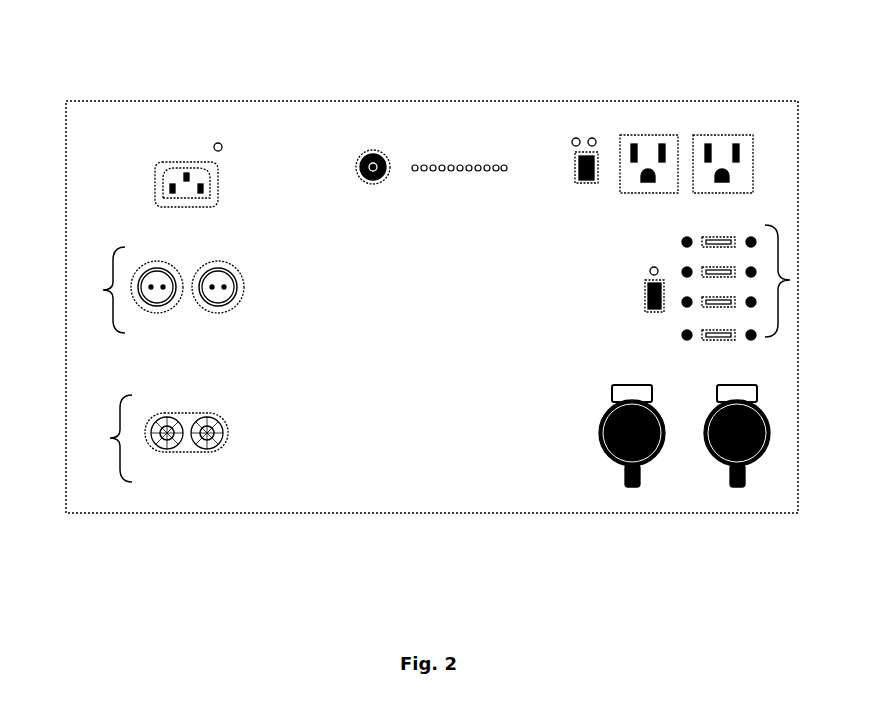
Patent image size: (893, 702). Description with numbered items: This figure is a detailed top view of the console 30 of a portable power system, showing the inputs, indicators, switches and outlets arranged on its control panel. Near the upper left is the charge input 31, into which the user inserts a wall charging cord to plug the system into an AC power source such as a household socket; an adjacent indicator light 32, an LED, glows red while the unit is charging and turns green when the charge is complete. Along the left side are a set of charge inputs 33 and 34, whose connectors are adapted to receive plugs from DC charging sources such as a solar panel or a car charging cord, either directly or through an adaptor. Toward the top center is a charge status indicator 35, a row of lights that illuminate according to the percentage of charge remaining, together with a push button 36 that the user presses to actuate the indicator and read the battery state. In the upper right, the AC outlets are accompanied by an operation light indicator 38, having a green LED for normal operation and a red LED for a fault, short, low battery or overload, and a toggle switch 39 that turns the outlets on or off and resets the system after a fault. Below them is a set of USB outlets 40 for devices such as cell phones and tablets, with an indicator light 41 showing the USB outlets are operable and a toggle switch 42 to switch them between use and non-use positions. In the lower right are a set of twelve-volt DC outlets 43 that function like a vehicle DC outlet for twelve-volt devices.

The console 30 is at (332, 80).
The charge input 31 is at (158, 165).
The indicator light 32 is at (217, 142).
The charge input 33 is at (106, 291).
The charge input 34 is at (112, 439).
The charge status indicator 35 is at (447, 166).
The push button 36 is at (380, 154).
The operation light indicator 38 is at (577, 138).
The toggle switch 39 is at (594, 158).
The USB outlets 40 is at (780, 282).
The indicator light 41 is at (652, 275).
The toggle switch 42 is at (647, 308).
The 12 VDC outlets 43 is at (718, 463).